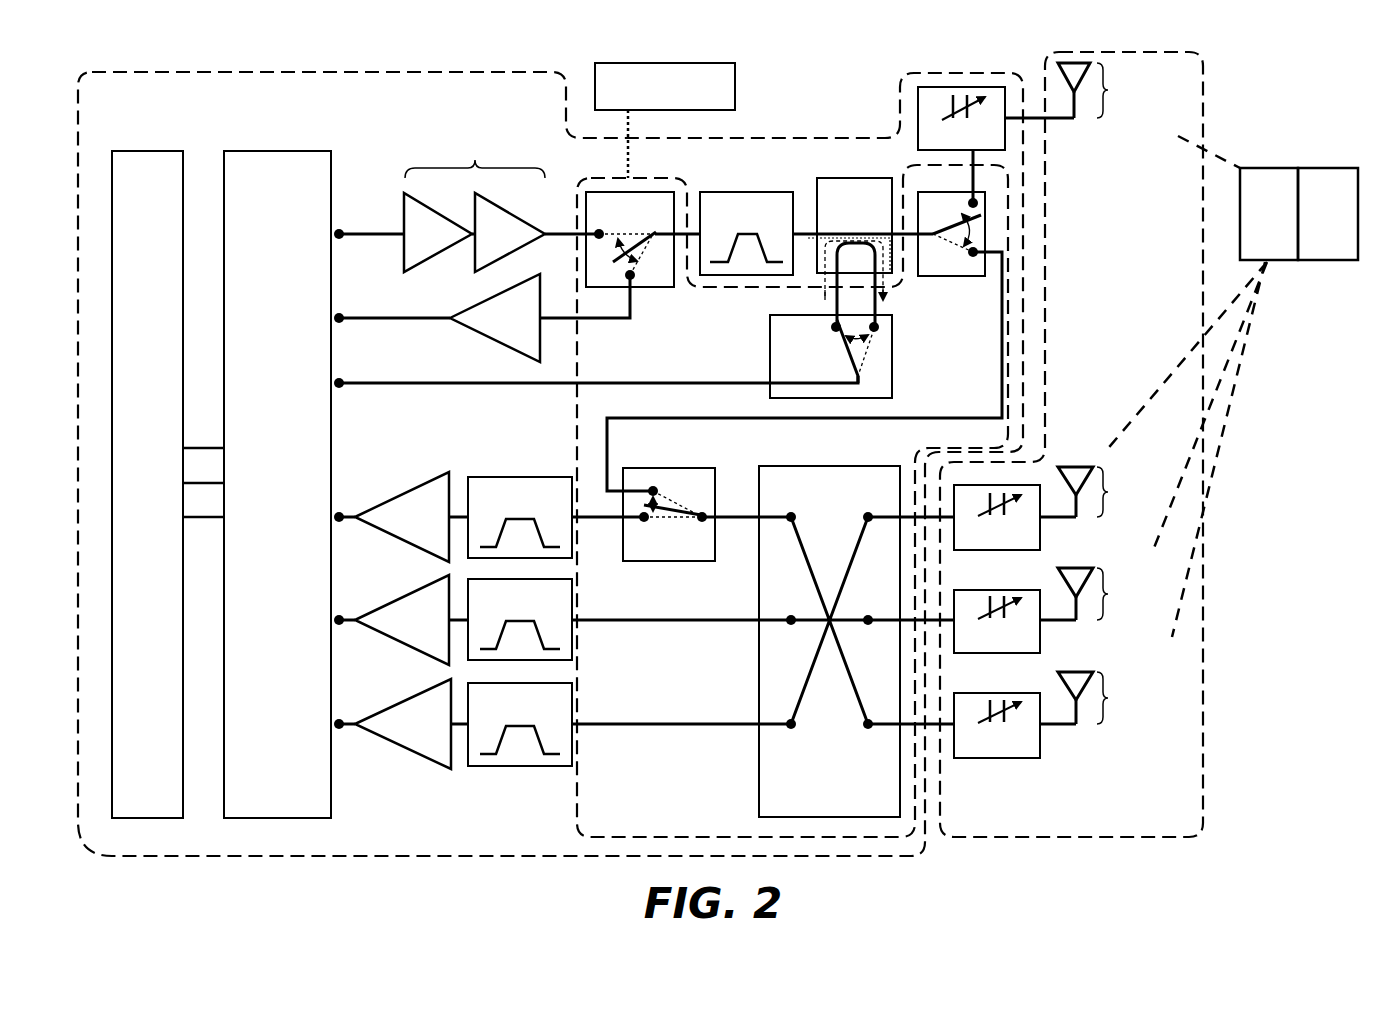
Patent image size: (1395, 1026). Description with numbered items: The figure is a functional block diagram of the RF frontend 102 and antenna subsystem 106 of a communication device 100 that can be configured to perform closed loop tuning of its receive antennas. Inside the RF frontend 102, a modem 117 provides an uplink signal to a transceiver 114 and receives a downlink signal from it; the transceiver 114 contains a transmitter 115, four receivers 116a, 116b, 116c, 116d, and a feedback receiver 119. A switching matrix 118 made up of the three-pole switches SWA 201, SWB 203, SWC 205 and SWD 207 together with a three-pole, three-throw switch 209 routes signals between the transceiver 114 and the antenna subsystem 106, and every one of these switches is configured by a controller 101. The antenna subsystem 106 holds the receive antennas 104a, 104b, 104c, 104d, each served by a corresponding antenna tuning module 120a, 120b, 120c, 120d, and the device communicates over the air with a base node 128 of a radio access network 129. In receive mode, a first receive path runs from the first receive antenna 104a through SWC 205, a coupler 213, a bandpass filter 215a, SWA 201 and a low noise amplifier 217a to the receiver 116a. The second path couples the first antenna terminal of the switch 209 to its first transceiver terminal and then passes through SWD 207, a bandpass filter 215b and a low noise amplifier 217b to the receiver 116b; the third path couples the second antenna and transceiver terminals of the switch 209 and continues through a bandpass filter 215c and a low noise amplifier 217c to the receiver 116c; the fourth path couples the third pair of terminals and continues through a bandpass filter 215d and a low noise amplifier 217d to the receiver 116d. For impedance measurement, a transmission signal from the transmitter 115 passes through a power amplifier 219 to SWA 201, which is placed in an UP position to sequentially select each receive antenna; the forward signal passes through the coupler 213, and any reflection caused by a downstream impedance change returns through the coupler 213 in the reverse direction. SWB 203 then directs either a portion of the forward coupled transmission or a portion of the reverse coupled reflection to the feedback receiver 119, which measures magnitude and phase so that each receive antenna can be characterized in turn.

The communication device 100 is at (192, 58).
The controller 101 is at (665, 120).
The RF frontend 102 is at (550, 464).
The first receive antenna 104a is at (1117, 90).
The second receive antenna 104b is at (1117, 491).
The third receive antenna 104c is at (1117, 594).
The fourth receive antenna 104d is at (1122, 698).
The antenna subsystem 106 is at (1071, 444).
The transceiver 114 is at (284, 484).
The transmitter 115 is at (344, 228).
The first receiver 116a is at (344, 312).
The second receiver 116b is at (344, 511).
The third receiver 116c is at (344, 614).
The fourth receiver 116d is at (344, 718).
The modem 117 is at (147, 484).
The switching matrix 118 is at (792, 501).
The feedback receiver 119 is at (344, 377).
The antenna tuning module 120a is at (996, 118).
The antenna tuning module 120b is at (1015, 517).
The antenna tuning module 120c is at (1015, 621).
The antenna tuning module 120d is at (1015, 725).
The base node 128 is at (1201, 386).
The RAN 129 is at (1328, 214).
The SWA 201 is at (620, 255).
The SWB 203 is at (831, 356).
The SWC 205 is at (804, 320).
The SWD 207 is at (681, 514).
The three-pole, three-throw switch 209 is at (856, 641).
The coupler 213 is at (850, 252).
The bandpass filter 215a is at (816, 233).
The bandpass filter 215b is at (520, 516).
The bandpass filter 215c is at (629, 618).
The bandpass filter 215d is at (629, 724).
The low noise amplifier 217a is at (495, 318).
The low noise amplifier 217b is at (411, 517).
The low noise amplifier 217c is at (411, 620).
The low noise amplifier 217d is at (411, 724).
The power amplifier 219 is at (501, 193).